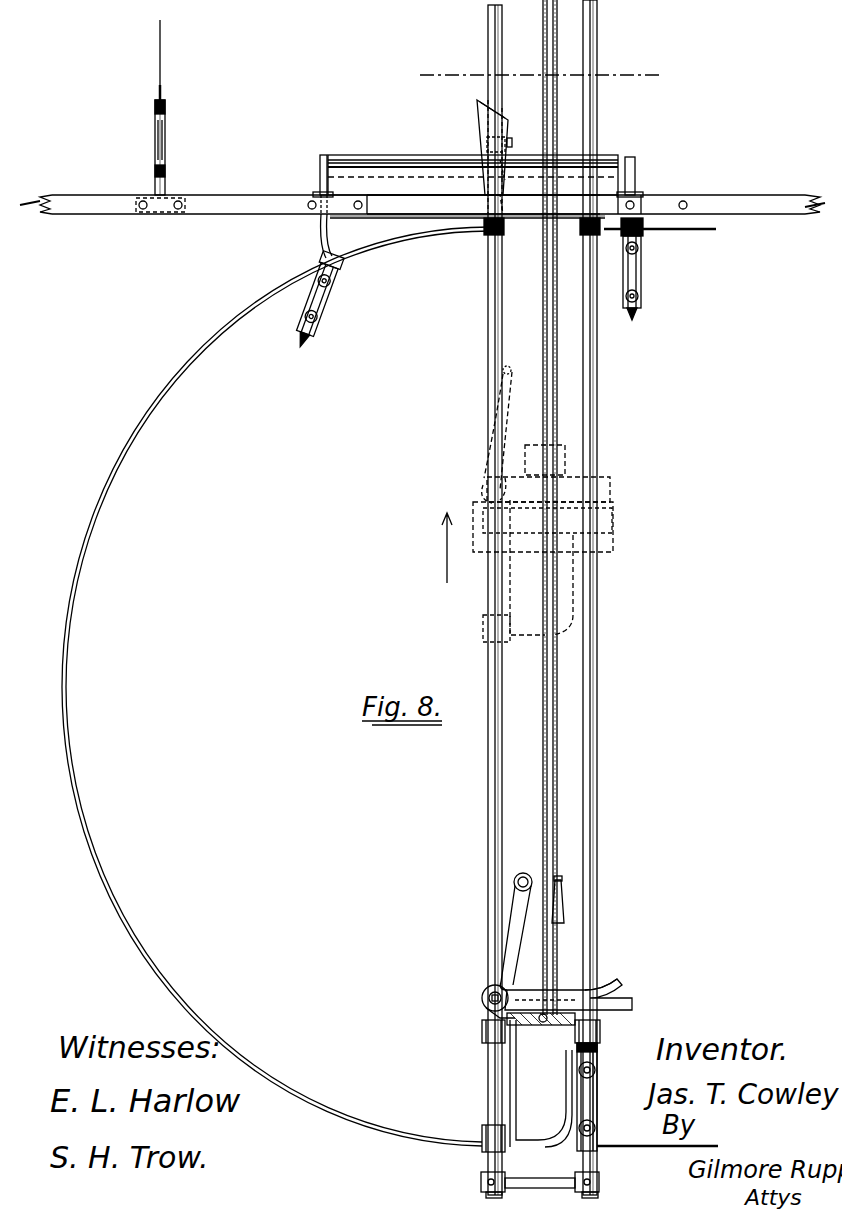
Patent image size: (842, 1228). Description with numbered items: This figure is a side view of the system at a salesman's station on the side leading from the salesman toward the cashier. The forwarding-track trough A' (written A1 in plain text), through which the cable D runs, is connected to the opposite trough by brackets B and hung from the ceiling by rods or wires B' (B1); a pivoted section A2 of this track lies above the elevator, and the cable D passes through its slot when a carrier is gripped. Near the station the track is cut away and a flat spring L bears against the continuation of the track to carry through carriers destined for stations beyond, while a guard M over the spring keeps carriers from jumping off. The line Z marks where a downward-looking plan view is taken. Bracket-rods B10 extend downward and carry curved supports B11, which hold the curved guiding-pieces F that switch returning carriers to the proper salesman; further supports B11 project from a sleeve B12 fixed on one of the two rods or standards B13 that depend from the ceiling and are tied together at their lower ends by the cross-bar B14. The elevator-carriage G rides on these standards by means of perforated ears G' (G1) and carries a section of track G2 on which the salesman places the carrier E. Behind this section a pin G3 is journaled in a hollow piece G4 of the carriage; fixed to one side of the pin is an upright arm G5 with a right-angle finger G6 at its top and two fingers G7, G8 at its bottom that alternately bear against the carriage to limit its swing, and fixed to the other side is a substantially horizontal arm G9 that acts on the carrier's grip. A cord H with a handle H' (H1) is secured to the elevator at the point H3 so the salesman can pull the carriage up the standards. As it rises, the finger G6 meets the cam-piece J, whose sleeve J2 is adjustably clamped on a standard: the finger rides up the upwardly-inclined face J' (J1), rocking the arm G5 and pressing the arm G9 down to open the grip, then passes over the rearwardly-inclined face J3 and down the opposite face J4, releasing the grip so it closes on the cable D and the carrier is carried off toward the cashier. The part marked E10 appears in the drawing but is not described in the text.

The rods or standards B13 is at (607, 786).
The cord H is at (541, 507).
The handle H' is at (568, 899).
The handle H1 is at (568, 899).
The section line Z is at (538, 75).
The forwarding-track trough A' is at (430, 195).
The forwarding-track trough A1 is at (430, 195).
The pivoted track section A2 is at (483, 204).
The cable D is at (422, 215).
The flat spring L is at (393, 220).
The guard M is at (405, 166).
The bracket B is at (168, 147).
The supporting rods or wires B' is at (171, 60).
The supporting rods or wires B1 is at (171, 60).
The cam-piece J is at (478, 157).
The rearwardly-inclined cam face J3 is at (500, 107).
The cam sleeve J2 is at (507, 140).
The opposite cam face J4 is at (486, 144).
The upwardly-inclined cam face J' is at (515, 175).
The upwardly-inclined cam face J1 is at (515, 175).
The post E10 is at (636, 173).
The curved supports B11 is at (640, 268).
The bracket-rods B10 is at (321, 237).
The curved guiding-pieces F is at (64, 640).
The upright arm G5 is at (511, 370).
The elevator track section G2 is at (613, 497).
The carrier E is at (613, 544).
The elevator-carriage G is at (528, 823).
The right-angle finger G6 is at (523, 873).
The upper limit finger G7 is at (510, 992).
The pin G3 is at (482, 992).
The hollow piece G4 is at (483, 1008).
The horizontal arm G9 is at (606, 988).
The lower limit finger G8 is at (541, 1029).
The cord attachment point H3 is at (542, 1029).
The perforated ears G' is at (540, 1086).
The perforated ears G1 is at (540, 1086).
The sleeve B12 is at (598, 1084).
The cross-bar B14 is at (540, 1174).